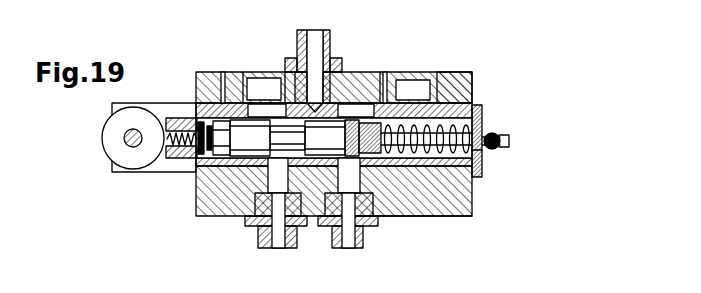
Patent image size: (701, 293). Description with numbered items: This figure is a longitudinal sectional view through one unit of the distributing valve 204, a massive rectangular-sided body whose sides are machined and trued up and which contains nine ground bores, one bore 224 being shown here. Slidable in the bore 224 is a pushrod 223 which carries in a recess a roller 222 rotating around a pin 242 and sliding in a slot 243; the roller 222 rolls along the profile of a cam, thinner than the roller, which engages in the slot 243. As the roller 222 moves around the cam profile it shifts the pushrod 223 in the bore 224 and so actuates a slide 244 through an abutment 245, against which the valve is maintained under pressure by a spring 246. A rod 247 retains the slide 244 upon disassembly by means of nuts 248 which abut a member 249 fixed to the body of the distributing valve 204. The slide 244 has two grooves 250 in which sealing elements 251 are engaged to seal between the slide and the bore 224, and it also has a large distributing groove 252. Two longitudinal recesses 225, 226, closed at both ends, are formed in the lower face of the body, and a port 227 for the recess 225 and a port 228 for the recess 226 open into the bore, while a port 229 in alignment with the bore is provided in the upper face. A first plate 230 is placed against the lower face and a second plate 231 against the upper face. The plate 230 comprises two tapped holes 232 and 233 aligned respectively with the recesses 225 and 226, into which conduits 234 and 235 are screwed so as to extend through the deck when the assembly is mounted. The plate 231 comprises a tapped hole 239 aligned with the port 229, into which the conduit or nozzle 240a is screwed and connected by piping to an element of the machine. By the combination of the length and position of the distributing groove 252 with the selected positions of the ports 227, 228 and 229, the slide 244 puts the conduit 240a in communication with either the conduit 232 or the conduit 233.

The distributing valve 204 is at (482, 108).
The roller 222 is at (108, 131).
The pushrod 223 is at (178, 159).
The ground bore 224 is at (438, 102).
The longitudinal recess 225 is at (372, 185).
The longitudinal recess 226 is at (263, 188).
The port 227 is at (365, 166).
The port 228 is at (266, 170).
The port 229 is at (312, 100).
The plate 230 is at (452, 217).
The plate 231 is at (472, 75).
The tapped hole 232 is at (355, 248).
The tapped hole 233 is at (284, 228).
The conduit 234 is at (375, 225).
The conduit 235 is at (270, 250).
The tapped hole 239 is at (330, 96).
The conduit or nozzle 240a is at (332, 45).
The pin 242 is at (125, 145).
The slot 243 is at (112, 174).
The slide 244 is at (350, 110).
The abutment 245 is at (201, 170).
The spring 246 is at (470, 128).
The rod 247 is at (509, 140).
The nut 248 is at (495, 150).
The member 249 is at (480, 172).
The groove 250 is at (240, 130).
The sealing element 251 is at (223, 117).
The distributing groove 252 is at (270, 103).